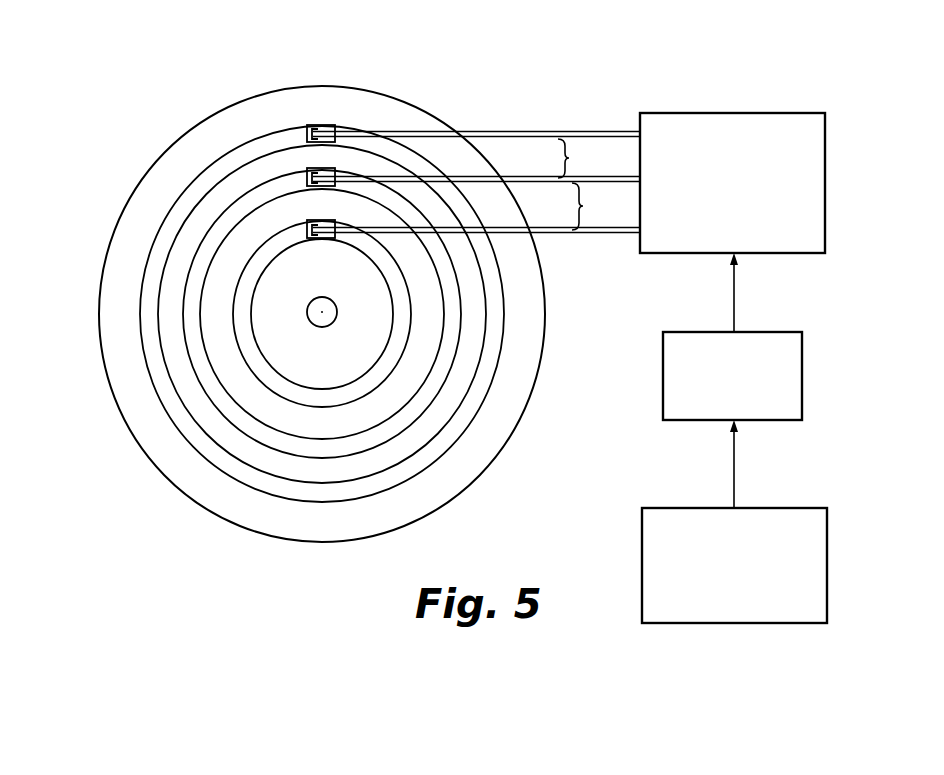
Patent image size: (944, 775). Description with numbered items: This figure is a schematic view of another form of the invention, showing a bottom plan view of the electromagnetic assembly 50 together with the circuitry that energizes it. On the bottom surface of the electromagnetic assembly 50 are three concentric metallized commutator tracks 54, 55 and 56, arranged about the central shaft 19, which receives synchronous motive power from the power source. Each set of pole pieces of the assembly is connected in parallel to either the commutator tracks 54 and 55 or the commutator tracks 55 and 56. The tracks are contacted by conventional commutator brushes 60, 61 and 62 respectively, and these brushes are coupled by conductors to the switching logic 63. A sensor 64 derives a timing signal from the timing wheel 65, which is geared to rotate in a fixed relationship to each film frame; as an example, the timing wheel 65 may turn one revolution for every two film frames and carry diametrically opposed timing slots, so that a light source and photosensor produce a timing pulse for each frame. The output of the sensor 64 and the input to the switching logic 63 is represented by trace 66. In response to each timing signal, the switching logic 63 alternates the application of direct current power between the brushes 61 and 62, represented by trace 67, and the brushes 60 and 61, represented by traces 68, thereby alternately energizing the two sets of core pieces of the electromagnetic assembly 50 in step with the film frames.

The electromagnetic assembly 50 is at (430, 109).
The commutator track 54 is at (274, 372).
The commutator track 55 is at (190, 330).
The commutator track 56 is at (162, 387).
The shaft 19 is at (338, 312).
The commutator brush 60 is at (313, 238).
The commutator brush 61 is at (310, 168).
The commutator brush 62 is at (315, 123).
The switching logic 63 is at (763, 113).
The sensor 64 is at (802, 360).
The timing wheel 65 is at (808, 508).
The trace 66 is at (734, 300).
The trace 67 is at (584, 158).
The traces 68 is at (593, 206).